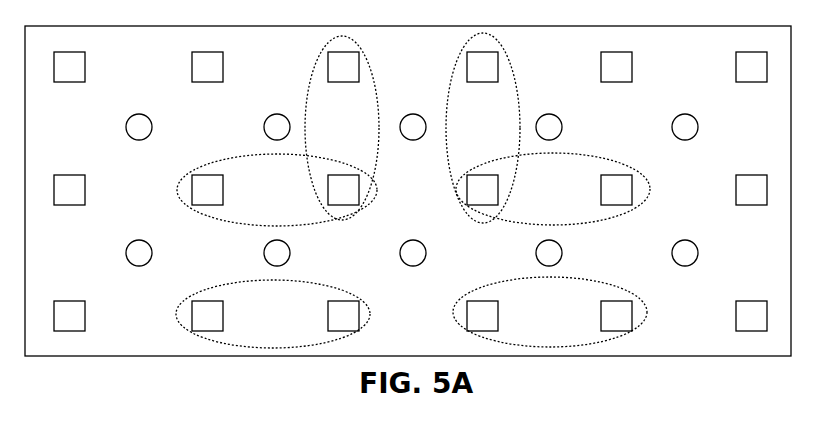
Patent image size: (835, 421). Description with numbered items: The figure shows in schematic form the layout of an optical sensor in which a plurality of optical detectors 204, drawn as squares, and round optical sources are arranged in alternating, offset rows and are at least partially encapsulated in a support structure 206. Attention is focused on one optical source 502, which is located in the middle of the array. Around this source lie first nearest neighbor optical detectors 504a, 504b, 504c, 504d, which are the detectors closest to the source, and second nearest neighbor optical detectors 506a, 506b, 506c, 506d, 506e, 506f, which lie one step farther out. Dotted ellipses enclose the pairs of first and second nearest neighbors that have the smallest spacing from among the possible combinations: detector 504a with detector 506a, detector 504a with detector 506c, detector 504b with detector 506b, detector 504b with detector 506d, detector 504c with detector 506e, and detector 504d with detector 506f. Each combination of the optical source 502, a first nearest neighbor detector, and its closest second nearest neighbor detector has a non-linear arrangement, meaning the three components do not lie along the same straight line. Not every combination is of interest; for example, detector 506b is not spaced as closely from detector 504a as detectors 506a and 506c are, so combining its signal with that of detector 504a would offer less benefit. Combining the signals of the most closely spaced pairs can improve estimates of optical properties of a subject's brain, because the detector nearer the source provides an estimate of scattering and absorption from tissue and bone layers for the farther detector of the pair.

The optical detector 204 is at (79, 203).
The support structure 206 is at (153, 343).
The optical source 502 is at (413, 262).
The first nearest neighbor optical detector 504a is at (348, 193).
The first nearest neighbor optical detector 504b is at (472, 192).
The first nearest neighbor optical detector 504c is at (350, 308).
The first nearest neighbor optical detector 504d is at (472, 308).
The second nearest neighbor optical detector 506a is at (348, 65).
The second nearest neighbor optical detector 506b is at (490, 68).
The second nearest neighbor optical detector 506c is at (209, 187).
The second nearest neighbor optical detector 506d is at (617, 198).
The second nearest neighbor optical detector 506e is at (208, 310).
The second nearest neighbor optical detector 506f is at (619, 320).